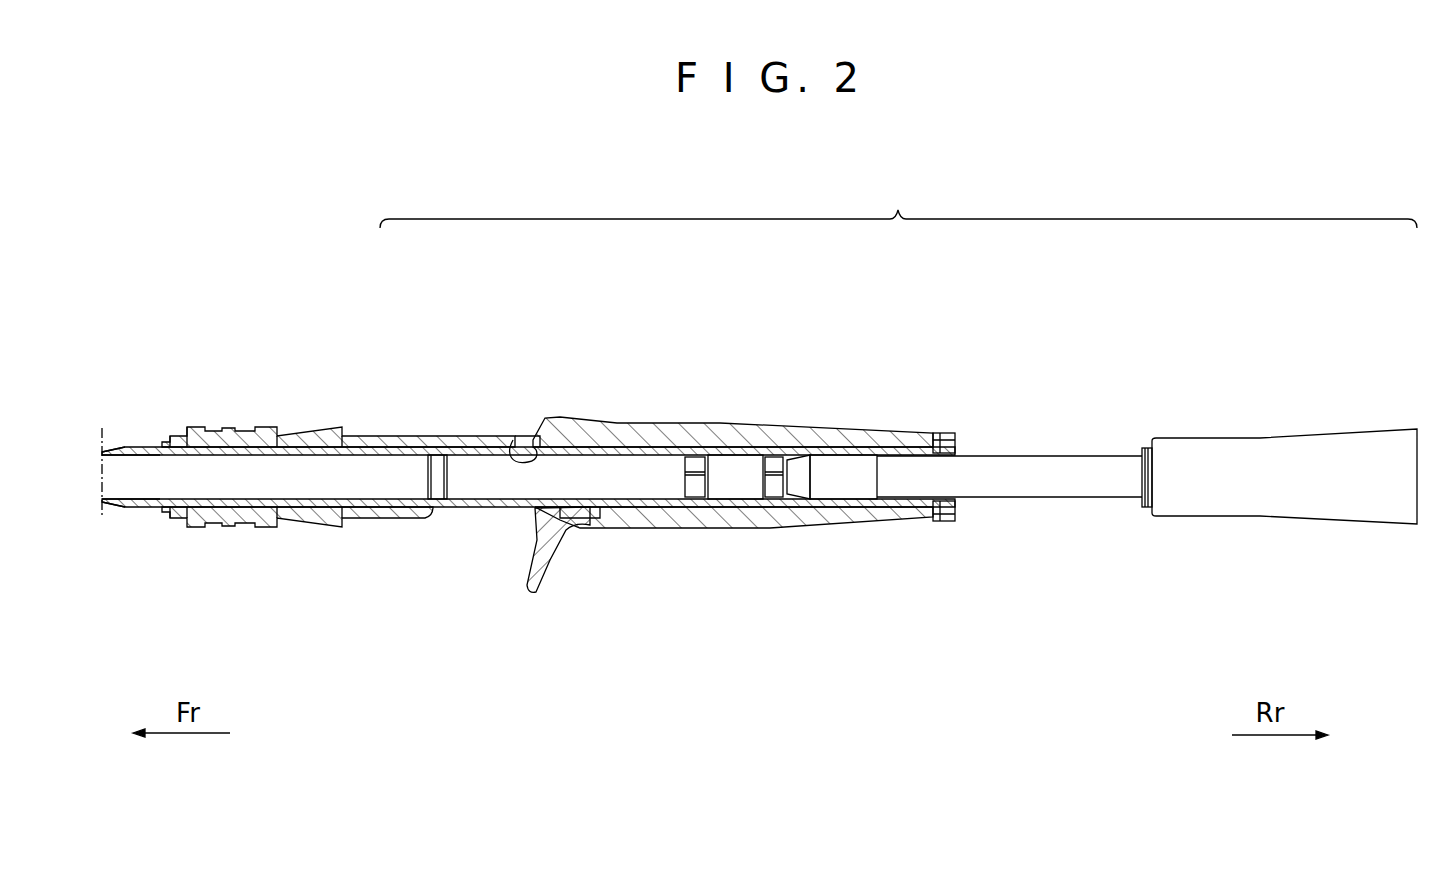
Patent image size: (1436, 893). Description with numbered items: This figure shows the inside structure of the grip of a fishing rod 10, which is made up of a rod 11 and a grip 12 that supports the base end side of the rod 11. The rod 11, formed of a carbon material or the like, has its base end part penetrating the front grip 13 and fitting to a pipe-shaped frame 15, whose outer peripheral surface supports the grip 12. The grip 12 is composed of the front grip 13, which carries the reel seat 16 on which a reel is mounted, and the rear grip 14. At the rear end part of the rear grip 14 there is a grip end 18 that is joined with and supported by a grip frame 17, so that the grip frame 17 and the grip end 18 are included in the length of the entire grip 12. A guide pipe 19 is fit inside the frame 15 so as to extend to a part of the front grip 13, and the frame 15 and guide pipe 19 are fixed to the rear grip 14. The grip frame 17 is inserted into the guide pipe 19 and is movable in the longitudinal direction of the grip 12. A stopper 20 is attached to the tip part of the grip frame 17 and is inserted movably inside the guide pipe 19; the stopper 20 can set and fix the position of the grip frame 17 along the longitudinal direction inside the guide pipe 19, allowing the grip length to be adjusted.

The fishing rod 10 is at (260, 315).
The rod 11 is at (130, 470).
The grip 12 is at (898, 202).
The front grip 13 is at (350, 518).
The rear grip 14 is at (680, 423).
The frame 15 is at (448, 438).
The reel seat 16 is at (383, 437).
The grip frame 17 is at (1058, 472).
The grip end 18 is at (1252, 490).
The guide pipe 19 is at (513, 438).
The stopper 20 is at (728, 487).